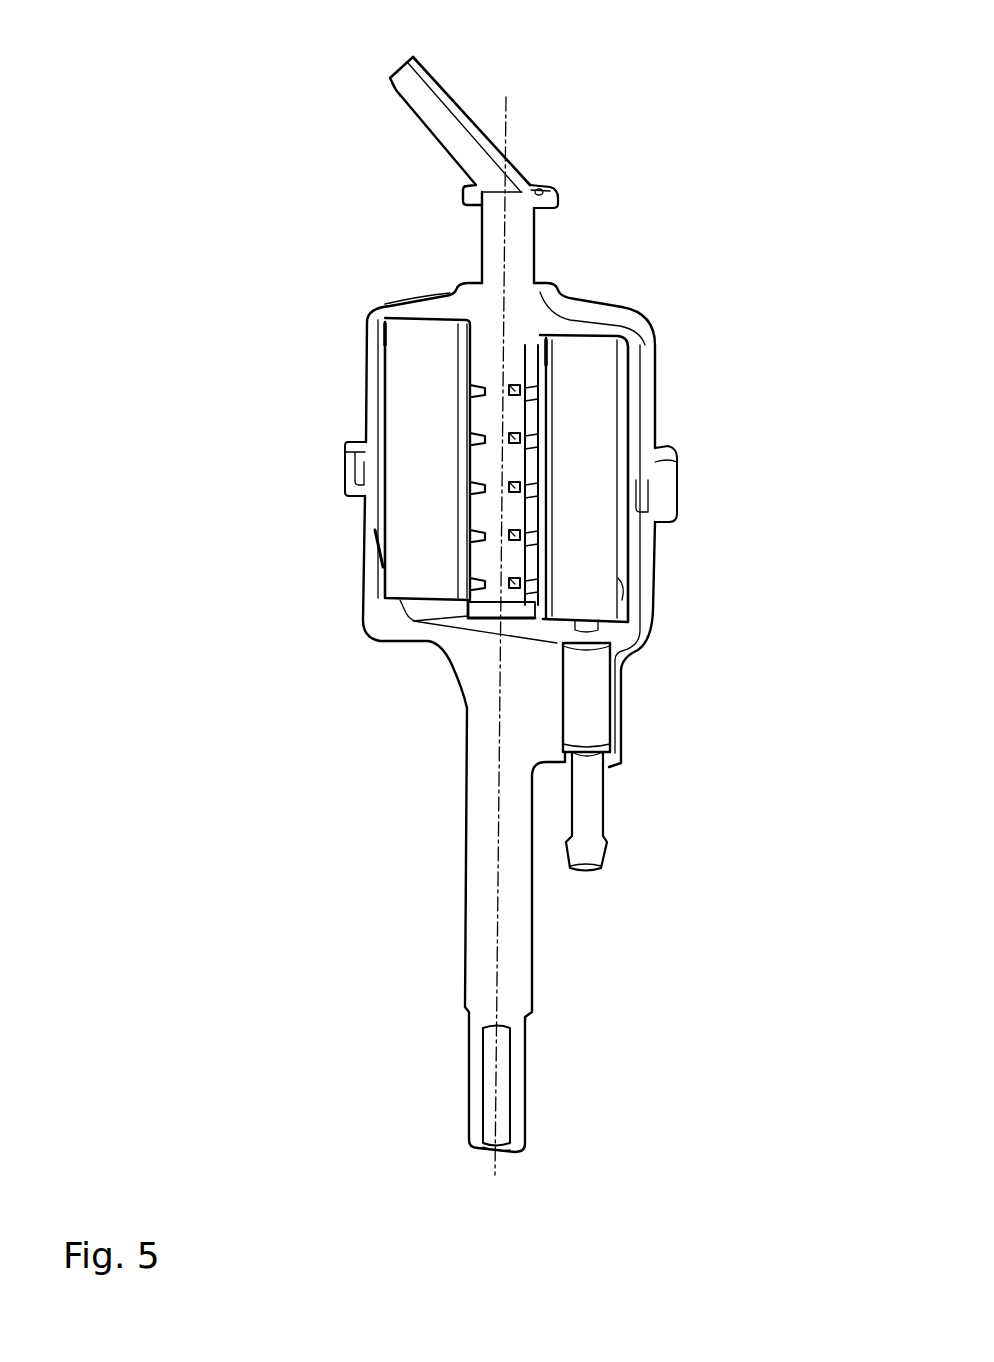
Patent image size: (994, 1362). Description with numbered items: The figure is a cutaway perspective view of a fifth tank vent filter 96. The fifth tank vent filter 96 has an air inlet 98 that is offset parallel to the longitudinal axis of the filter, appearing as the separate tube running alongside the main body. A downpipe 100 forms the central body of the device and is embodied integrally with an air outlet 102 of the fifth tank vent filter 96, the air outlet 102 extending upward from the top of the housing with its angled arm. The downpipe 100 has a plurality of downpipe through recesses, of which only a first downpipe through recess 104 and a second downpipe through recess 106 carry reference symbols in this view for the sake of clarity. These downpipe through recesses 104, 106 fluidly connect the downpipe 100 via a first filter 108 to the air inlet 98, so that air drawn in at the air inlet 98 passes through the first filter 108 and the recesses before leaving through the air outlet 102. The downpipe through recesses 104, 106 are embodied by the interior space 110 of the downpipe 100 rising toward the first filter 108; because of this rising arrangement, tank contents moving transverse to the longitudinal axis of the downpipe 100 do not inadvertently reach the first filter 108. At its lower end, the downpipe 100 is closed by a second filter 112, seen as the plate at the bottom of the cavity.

The fifth tank vent filter 96 is at (727, 93).
The air inlet 98 is at (616, 725).
The downpipe 100 is at (547, 378).
The air outlet 102 is at (536, 242).
The first downpipe through recess 104 is at (537, 396).
The second downpipe through recess 106 is at (520, 445).
The first filter 108 is at (594, 557).
The interior space 110 is at (497, 463).
The second filter 112 is at (497, 615).